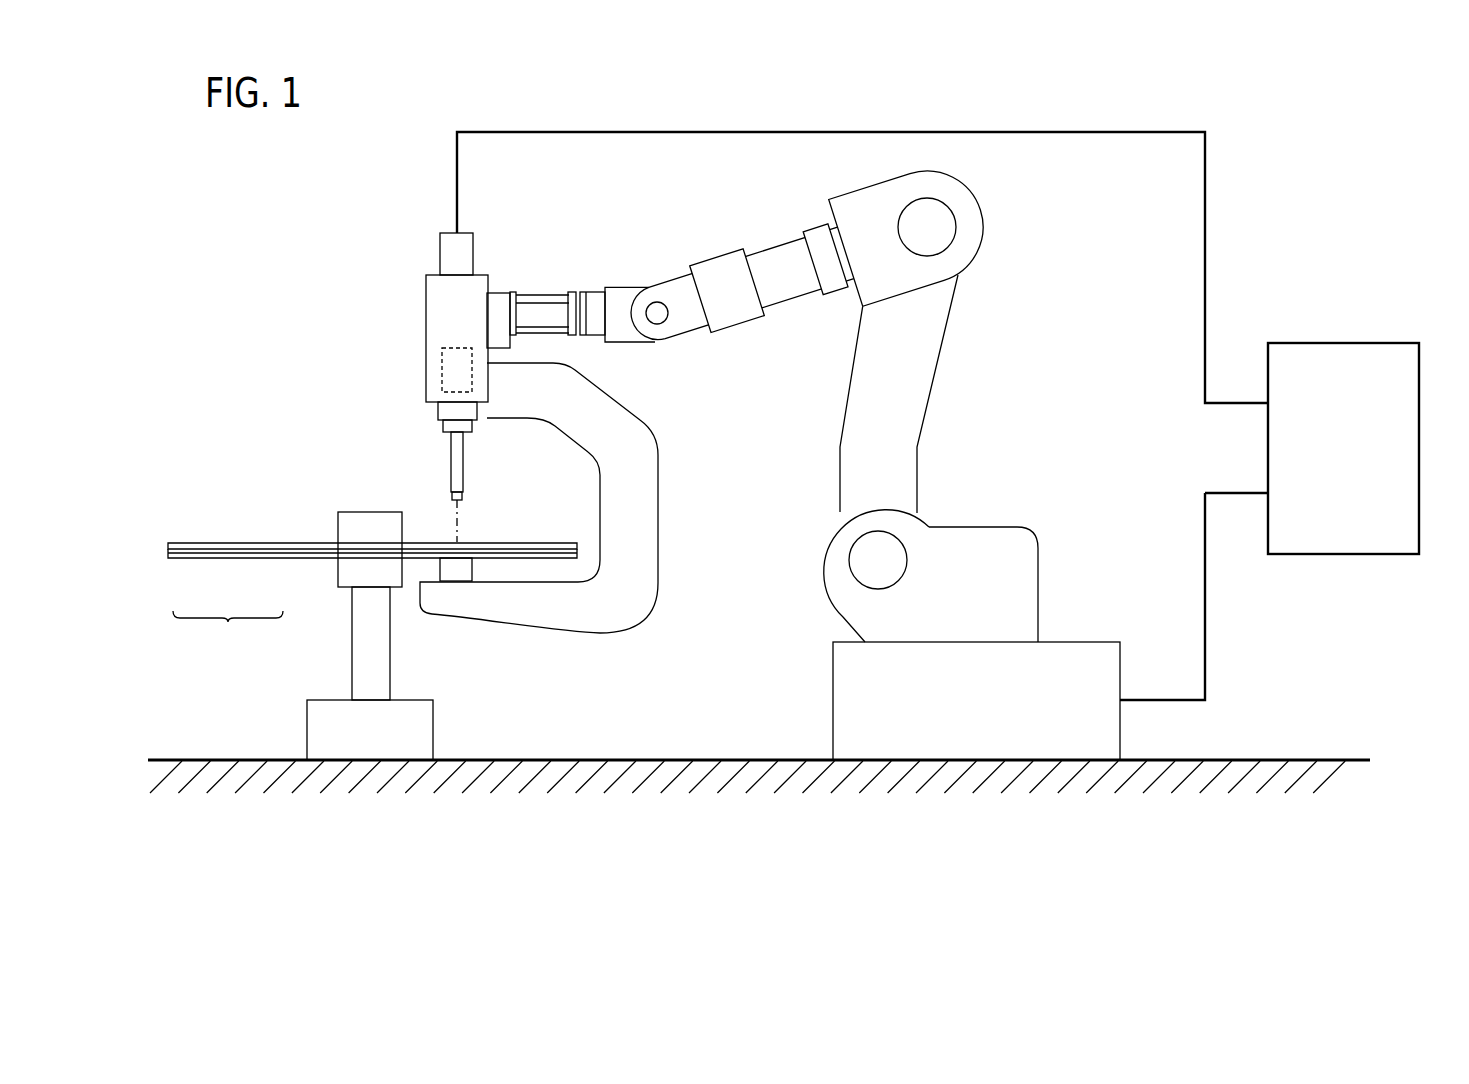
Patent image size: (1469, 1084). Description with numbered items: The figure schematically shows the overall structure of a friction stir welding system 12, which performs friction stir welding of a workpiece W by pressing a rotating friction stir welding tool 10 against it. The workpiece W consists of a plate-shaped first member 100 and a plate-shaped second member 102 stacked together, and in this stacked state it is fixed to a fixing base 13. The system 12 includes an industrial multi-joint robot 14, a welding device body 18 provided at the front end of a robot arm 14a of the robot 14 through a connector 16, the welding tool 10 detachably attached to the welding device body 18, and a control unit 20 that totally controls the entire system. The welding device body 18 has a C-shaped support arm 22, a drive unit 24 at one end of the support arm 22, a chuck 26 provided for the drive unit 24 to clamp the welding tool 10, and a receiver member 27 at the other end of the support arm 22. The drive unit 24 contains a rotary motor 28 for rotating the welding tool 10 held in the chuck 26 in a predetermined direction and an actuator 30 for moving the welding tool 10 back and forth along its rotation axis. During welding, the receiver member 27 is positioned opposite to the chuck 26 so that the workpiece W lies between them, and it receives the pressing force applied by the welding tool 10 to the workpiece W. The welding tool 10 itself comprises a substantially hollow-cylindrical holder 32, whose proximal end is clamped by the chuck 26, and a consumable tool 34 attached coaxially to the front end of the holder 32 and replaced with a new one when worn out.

The friction stir welding tool 10 is at (393, 437).
The friction stir welding system 12 is at (363, 140).
The fixing base 13 is at (338, 512).
The industrial multi-joint robot 14 is at (968, 330).
The robot arm 14a is at (678, 292).
The connector 16 is at (538, 313).
The welding device body 18 is at (640, 405).
The control unit 20 is at (1367, 343).
The C-shaped support arm 22 is at (645, 498).
The drive unit 24 is at (435, 292).
The chuck 26 is at (445, 410).
The receiver member 27 is at (455, 570).
The rotary motor 28 is at (445, 247).
The actuator 30 is at (442, 362).
The holder 32 is at (455, 452).
The tool 34 is at (455, 495).
The first member 100 is at (230, 543).
The second member 102 is at (198, 557).
The workpiece W is at (228, 630).